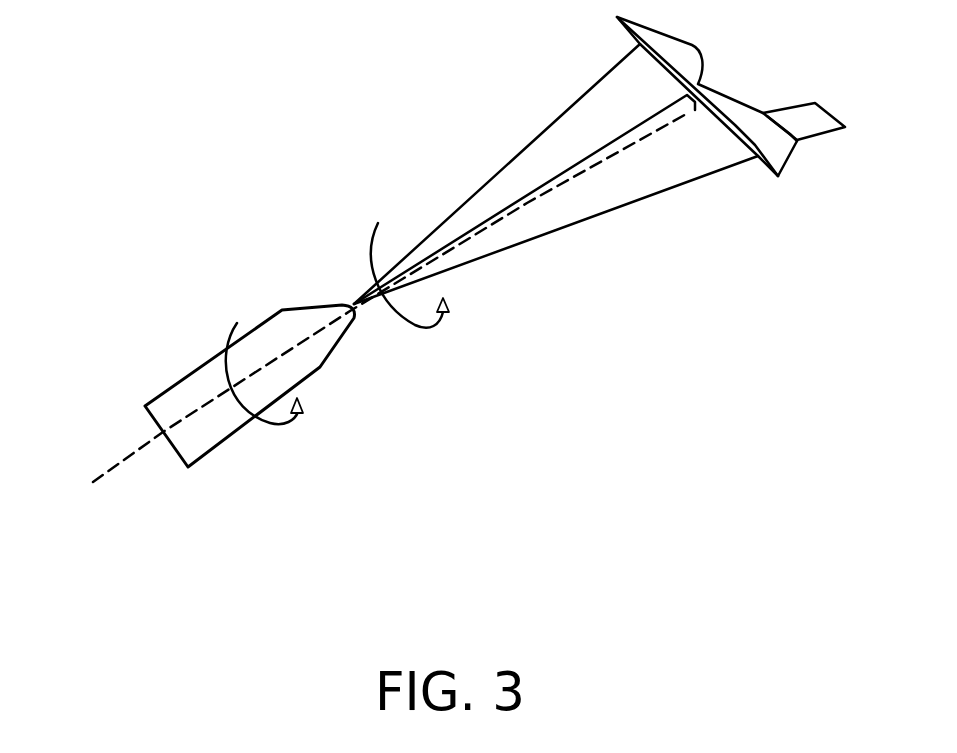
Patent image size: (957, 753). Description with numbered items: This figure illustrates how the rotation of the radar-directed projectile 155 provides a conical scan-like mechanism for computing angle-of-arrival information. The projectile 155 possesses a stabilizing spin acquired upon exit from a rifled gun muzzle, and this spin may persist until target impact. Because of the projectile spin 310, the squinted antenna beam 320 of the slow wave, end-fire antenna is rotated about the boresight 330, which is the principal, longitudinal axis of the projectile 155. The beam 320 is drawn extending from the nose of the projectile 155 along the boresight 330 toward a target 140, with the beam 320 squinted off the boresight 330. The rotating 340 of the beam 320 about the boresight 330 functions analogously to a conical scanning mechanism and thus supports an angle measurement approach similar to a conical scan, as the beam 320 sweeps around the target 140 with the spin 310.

The target aircraft 140 is at (818, 103).
The projectile 155 is at (193, 369).
The projectile spin 310 is at (283, 428).
The squinted antenna beam 320 is at (632, 203).
The boresight 330 is at (120, 463).
The rotating of the beam 340 is at (410, 330).